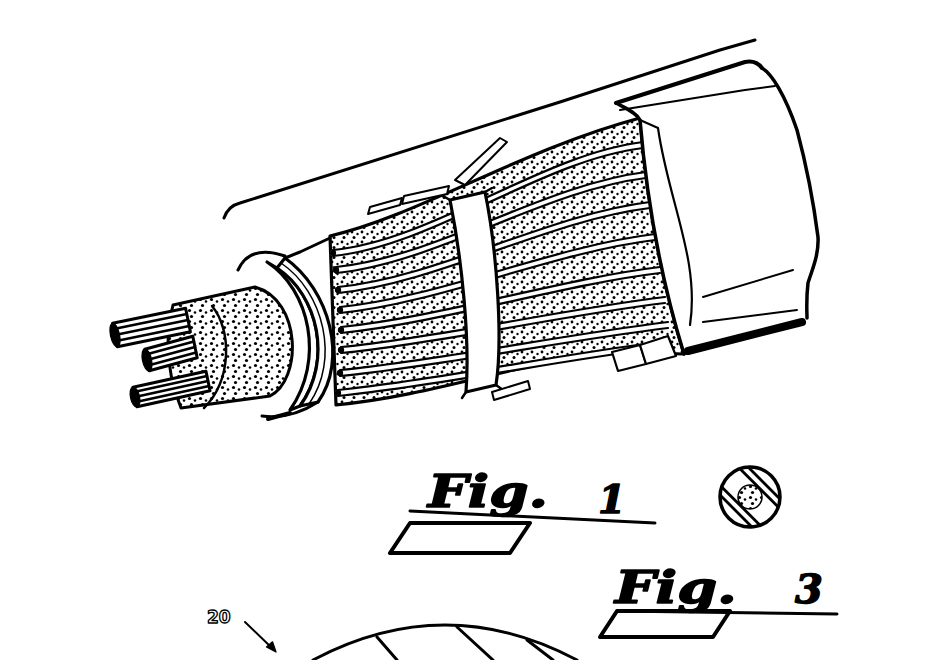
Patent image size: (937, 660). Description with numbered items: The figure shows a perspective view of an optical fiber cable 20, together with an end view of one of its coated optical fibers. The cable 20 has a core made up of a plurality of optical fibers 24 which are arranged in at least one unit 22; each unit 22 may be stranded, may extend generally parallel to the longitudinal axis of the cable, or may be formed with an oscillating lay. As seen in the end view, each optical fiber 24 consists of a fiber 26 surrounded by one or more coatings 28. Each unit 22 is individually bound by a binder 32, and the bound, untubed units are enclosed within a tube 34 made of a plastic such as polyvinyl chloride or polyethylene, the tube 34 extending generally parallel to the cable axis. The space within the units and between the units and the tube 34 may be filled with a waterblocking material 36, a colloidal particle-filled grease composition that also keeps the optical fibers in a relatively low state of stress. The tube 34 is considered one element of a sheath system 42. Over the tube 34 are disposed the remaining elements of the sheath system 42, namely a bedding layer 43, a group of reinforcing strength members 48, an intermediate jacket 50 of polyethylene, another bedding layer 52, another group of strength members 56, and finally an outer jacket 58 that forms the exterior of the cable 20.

In FIG. 1, the cable 20 is at (264, 116).
In FIG. 1, the unit 22 is at (133, 380).
In FIG. 1, the optical fiber 24 is at (133, 397).
In FIG. 3, the optical fiber 24 is at (781, 500).
In FIG. 3, the fiber 26 is at (768, 487).
In FIG. 3, the coating 28 is at (752, 468).
In FIG. 1, the binder 32 is at (143, 327).
In FIG. 1, the tube 34 is at (285, 414).
In FIG. 1, the waterblocking material 36 is at (233, 410).
In FIG. 1, the sheath system 42 is at (590, 94).
In FIG. 1, the bedding layer 43 is at (317, 250).
In FIG. 1, the reinforcing strength member 48 is at (346, 412).
In FIG. 1, the intermediate jacket 50 is at (445, 392).
In FIG. 1, the bedding layer 52 is at (512, 386).
In FIG. 1, the strength member 56 is at (485, 160).
In FIG. 1, the outer jacket 58 is at (660, 353).